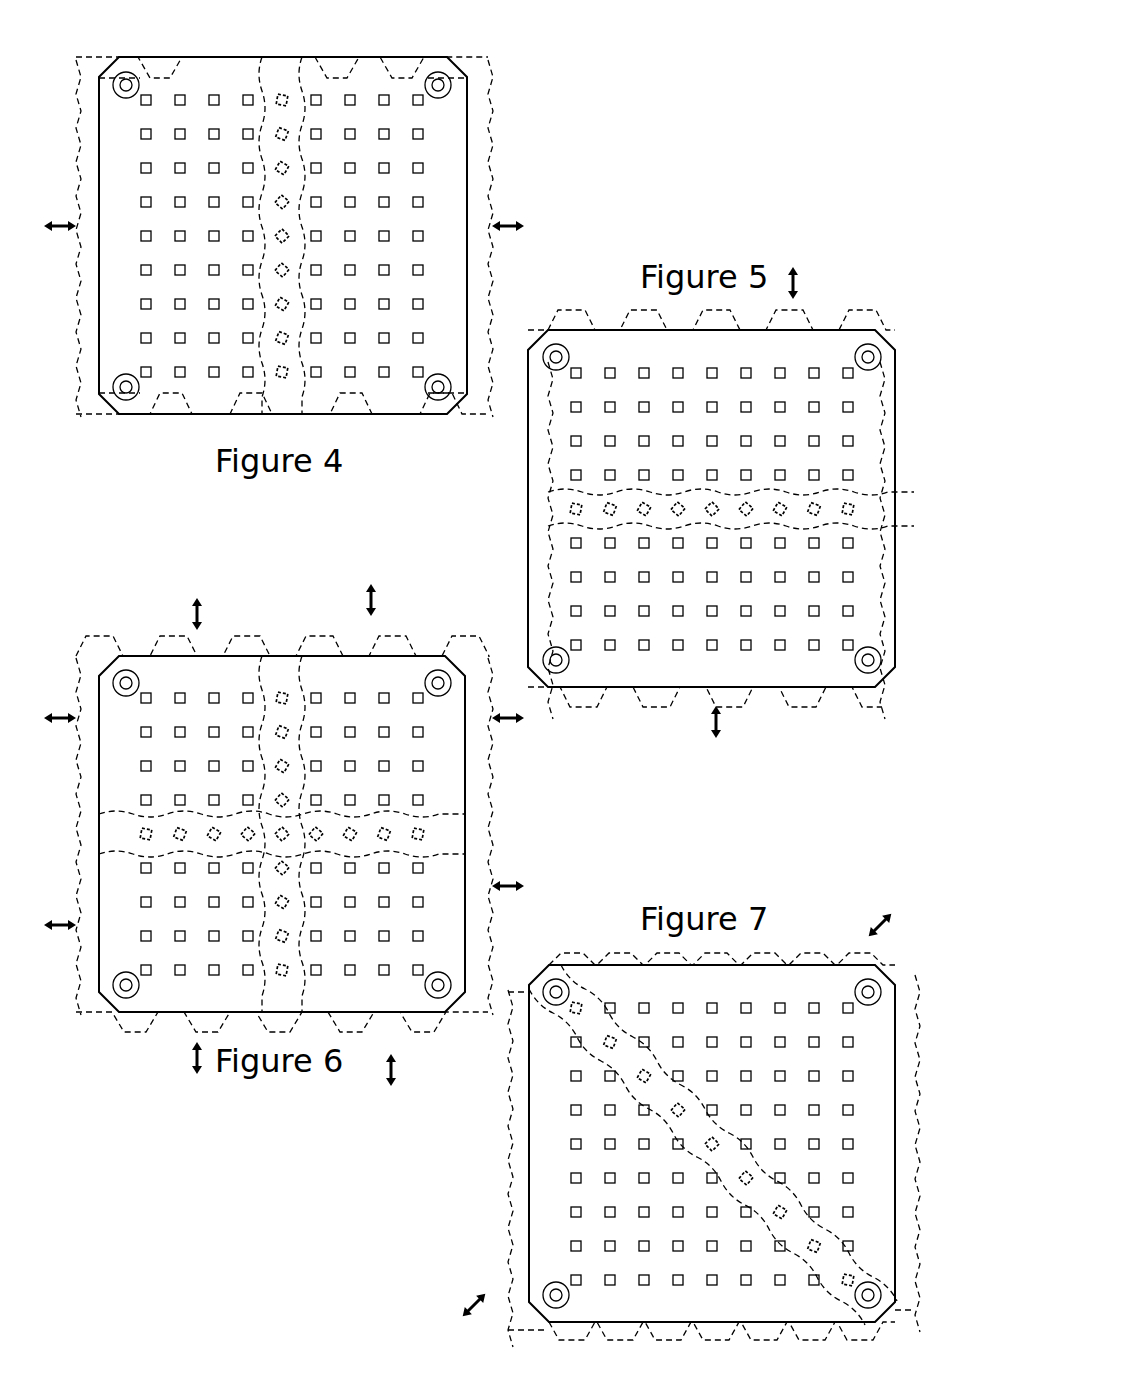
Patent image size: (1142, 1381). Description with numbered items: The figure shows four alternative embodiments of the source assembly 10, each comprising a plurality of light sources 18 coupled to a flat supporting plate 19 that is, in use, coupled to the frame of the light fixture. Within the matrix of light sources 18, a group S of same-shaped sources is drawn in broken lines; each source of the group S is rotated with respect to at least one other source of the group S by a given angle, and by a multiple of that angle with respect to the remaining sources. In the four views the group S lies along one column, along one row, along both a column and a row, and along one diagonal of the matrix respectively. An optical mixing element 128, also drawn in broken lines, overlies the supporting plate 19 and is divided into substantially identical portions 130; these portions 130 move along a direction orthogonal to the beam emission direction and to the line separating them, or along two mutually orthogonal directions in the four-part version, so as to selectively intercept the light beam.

In FIG. 4, the source assembly 10 is at (470, 54).
In FIG. 5, the source assembly 10 is at (894, 316).
In FIG. 6, the source assembly 10 is at (97, 612).
In FIG. 7, the source assembly 10 is at (912, 940).
In FIG. 4, the light sources 18 is at (172, 128).
In FIG. 5, the light sources 18 is at (816, 400).
In FIG. 6, the light sources 18 is at (144, 696).
In FIG. 7, the light sources 18 is at (784, 1006).
In FIG. 4, the supporting plate 19 is at (310, 57).
In FIG. 5, the supporting plate 19 is at (893, 502).
In FIG. 6, the supporting plate 19 is at (282, 655).
In FIG. 7, the supporting plate 19 is at (880, 1318).
In FIG. 4, the optical mixing element 128 is at (492, 180).
In FIG. 5, the optical mixing element 128 is at (893, 602).
In FIG. 6, the optical mixing element 128 is at (76, 1016).
In FIG. 7, the optical mixing element 128 is at (505, 1180).
In FIG. 4, the portions 130 is at (94, 57).
In FIG. 5, the portions 130 is at (618, 304).
In FIG. 6, the portions 130 is at (242, 636).
In FIG. 7, the portions 130 is at (530, 1325).
In FIG. 4, the group S is at (280, 88).
In FIG. 5, the group S is at (554, 506).
In FIG. 6, the group S is at (125, 832).
In FIG. 7, the group S is at (598, 1000).